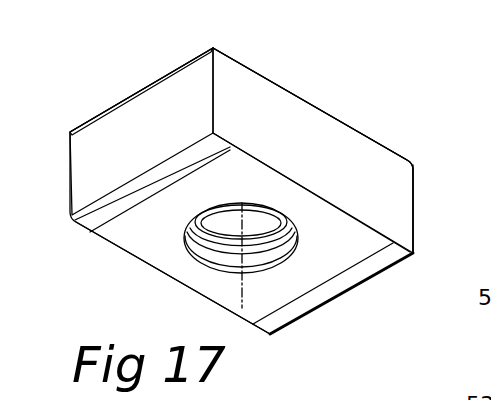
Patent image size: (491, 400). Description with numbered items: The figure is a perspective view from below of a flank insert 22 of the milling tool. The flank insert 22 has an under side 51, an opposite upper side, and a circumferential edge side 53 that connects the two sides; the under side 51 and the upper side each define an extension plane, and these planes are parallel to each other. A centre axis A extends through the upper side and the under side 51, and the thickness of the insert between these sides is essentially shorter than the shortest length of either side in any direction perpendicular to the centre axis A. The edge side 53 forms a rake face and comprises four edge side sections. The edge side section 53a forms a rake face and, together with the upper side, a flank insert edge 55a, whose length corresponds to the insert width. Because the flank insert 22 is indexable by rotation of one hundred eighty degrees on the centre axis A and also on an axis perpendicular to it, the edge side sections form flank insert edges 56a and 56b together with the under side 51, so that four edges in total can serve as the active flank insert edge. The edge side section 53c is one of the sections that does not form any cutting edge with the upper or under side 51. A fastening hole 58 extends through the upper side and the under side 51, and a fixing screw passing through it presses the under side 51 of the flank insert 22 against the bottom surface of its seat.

The flank insert 22 is at (120, 64).
The under side 51 is at (322, 266).
The edge side 53 is at (92, 154).
The edge side section 53a is at (352, 157).
The edge side section 53c is at (167, 100).
The flank insert edge 55a is at (285, 88).
The flank insert edge 56a is at (383, 228).
The flank insert edge 56b is at (125, 257).
The fastening hole 58 is at (233, 223).
The centre axis A is at (242, 284).